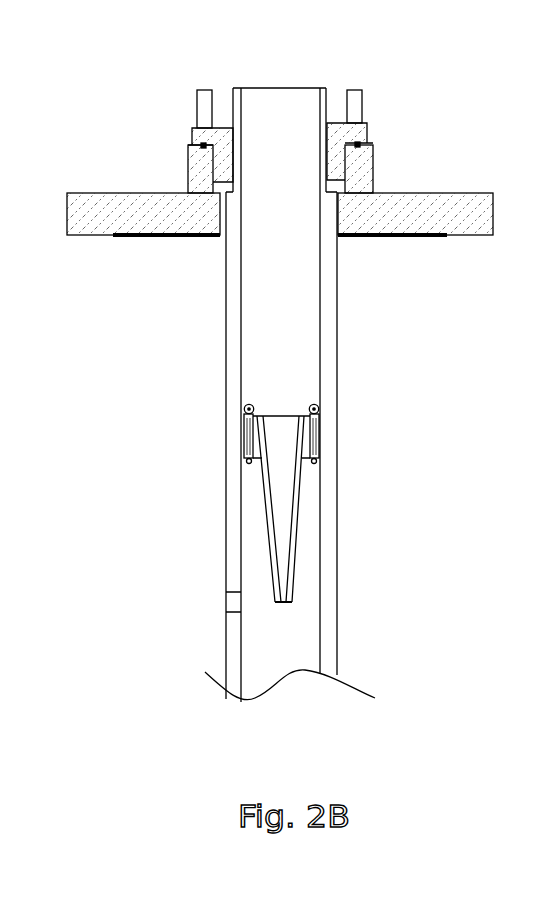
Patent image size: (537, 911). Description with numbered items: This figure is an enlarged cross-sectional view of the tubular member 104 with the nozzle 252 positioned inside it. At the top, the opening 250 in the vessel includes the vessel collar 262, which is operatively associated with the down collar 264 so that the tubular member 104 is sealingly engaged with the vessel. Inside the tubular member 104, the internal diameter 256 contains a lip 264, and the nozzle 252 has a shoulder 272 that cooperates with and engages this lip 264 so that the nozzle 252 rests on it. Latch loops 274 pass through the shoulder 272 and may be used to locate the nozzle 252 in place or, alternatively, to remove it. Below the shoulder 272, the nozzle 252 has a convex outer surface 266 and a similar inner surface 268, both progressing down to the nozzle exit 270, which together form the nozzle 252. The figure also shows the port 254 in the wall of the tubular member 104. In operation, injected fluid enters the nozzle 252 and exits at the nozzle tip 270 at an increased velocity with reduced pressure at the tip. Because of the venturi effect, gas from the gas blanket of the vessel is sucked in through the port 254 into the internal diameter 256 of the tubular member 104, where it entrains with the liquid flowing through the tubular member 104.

The tubular member 104 is at (338, 271).
The opening 250 is at (212, 212).
The nozzle 252 is at (311, 493).
The port 254 is at (226, 603).
The internal diameter 256 is at (244, 357).
The vessel collar 262 is at (373, 180).
The down collar / lip 264 is at (361, 132).
The convex outer surface 266 is at (303, 578).
The inner surface 268 is at (291, 513).
The nozzle exit 270 is at (291, 604).
The shoulder 272 is at (244, 437).
The latch loops 274 is at (244, 409).